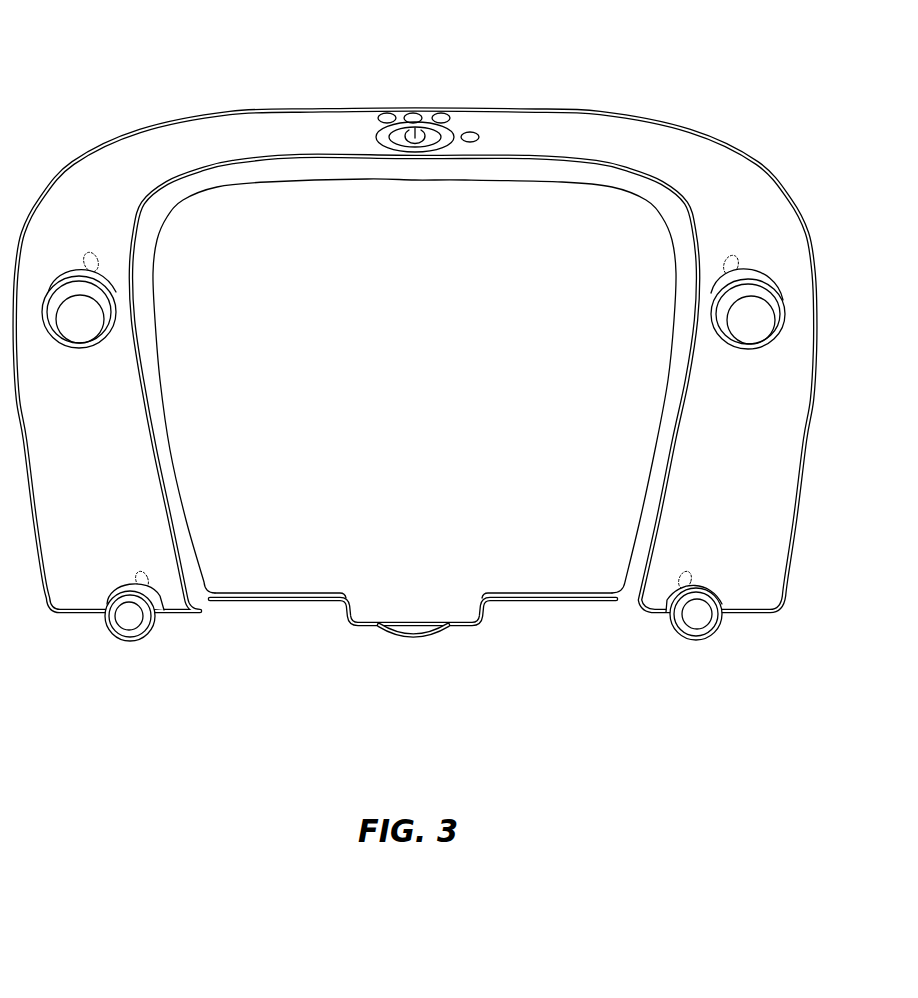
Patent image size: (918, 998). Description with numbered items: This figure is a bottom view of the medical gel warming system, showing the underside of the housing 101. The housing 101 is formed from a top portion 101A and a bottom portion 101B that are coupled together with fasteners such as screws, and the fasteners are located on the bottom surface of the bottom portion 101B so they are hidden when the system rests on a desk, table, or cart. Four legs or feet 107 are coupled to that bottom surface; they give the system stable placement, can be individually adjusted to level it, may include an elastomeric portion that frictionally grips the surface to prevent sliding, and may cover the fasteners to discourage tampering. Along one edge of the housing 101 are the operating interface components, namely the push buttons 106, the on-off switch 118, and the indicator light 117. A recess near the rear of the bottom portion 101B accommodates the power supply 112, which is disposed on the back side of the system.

The housing 101 is at (440, 419).
The top portion 101A is at (787, 577).
The bottom portion 101B is at (495, 453).
The push buttons 106 is at (441, 85).
The legs or feet 107 is at (74, 268).
The power supply 112 is at (413, 638).
The indicator light 117 is at (481, 136).
The on-off switch 118 is at (441, 130).